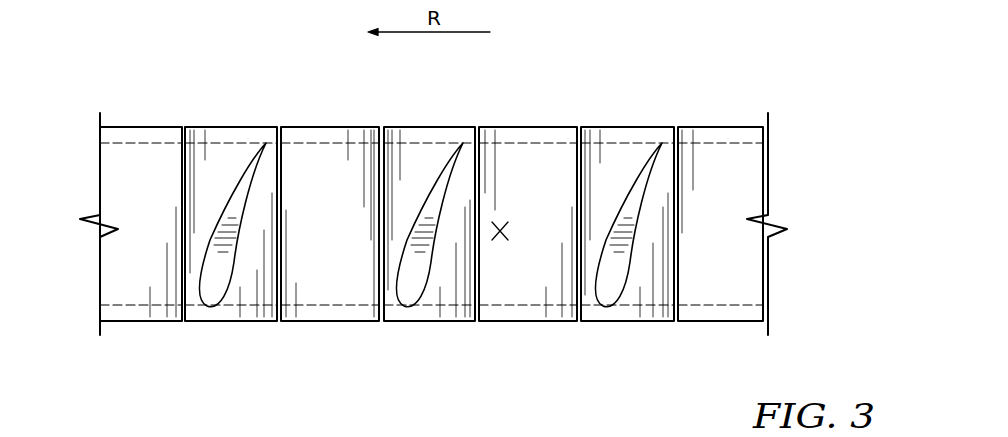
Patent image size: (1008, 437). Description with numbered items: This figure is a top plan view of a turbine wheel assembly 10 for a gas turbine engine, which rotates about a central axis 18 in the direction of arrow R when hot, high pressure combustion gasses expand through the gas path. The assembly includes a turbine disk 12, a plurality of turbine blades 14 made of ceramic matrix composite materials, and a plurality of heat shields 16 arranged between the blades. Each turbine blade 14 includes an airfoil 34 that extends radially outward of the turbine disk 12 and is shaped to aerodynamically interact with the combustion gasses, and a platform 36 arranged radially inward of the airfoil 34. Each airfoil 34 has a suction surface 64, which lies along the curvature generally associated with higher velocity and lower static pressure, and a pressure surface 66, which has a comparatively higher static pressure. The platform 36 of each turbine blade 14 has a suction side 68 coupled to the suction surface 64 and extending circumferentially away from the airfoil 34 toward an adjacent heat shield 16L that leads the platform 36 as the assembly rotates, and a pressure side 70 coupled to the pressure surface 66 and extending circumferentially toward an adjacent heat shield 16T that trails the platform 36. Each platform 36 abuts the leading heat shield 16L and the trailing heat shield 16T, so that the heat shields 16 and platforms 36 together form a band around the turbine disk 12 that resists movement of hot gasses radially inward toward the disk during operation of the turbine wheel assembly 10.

The turbine wheel assembly 10 is at (760, 86).
The turbine disk 12 is at (128, 192).
The turbine blade 14 is at (262, 110).
The heat shield 16 is at (125, 330).
The leading heat shield 16L is at (318, 330).
The trailing heat shield 16T is at (539, 330).
The central axis 18 is at (512, 230).
The airfoil 34 is at (250, 160).
The platform 36 is at (427, 310).
The suction surface 64 is at (217, 214).
The pressure surface 66 is at (245, 197).
The suction side 68 is at (205, 245).
The pressure side 70 is at (240, 248).